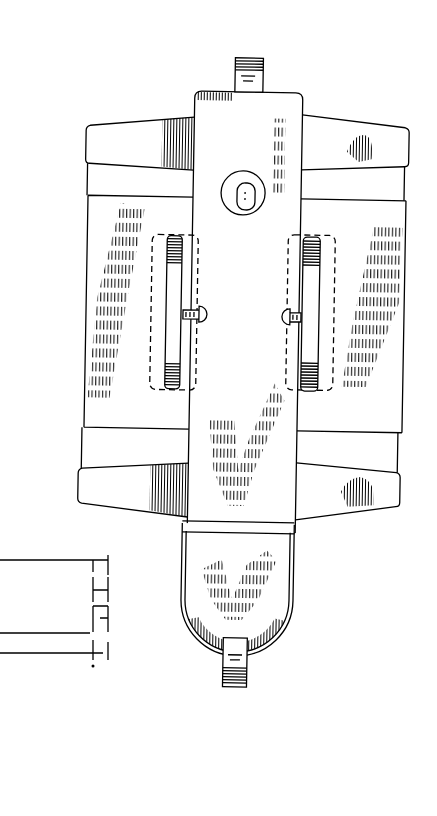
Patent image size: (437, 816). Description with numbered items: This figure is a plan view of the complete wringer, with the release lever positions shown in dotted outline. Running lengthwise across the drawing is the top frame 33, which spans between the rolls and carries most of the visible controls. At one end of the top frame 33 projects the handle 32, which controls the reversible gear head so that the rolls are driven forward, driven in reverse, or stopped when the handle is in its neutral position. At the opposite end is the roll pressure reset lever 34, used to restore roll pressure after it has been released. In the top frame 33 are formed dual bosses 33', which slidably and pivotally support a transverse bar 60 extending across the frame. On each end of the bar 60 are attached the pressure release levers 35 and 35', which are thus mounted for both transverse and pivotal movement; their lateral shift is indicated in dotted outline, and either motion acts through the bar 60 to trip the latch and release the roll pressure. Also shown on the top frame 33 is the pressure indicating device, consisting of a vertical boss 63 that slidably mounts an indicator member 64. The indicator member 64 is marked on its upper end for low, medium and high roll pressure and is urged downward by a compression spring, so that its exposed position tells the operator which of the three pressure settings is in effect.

The handle 32 is at (228, 681).
The top frame 33 is at (218, 588).
The dual bosses 33' is at (242, 310).
The roll pressure reset lever 34 is at (232, 70).
The pressure release lever 35 is at (162, 317).
The pressure release lever 35' is at (325, 309).
The transverse bar 60 is at (189, 328).
The vertical boss 63 is at (240, 216).
The indicator member 64 is at (240, 183).